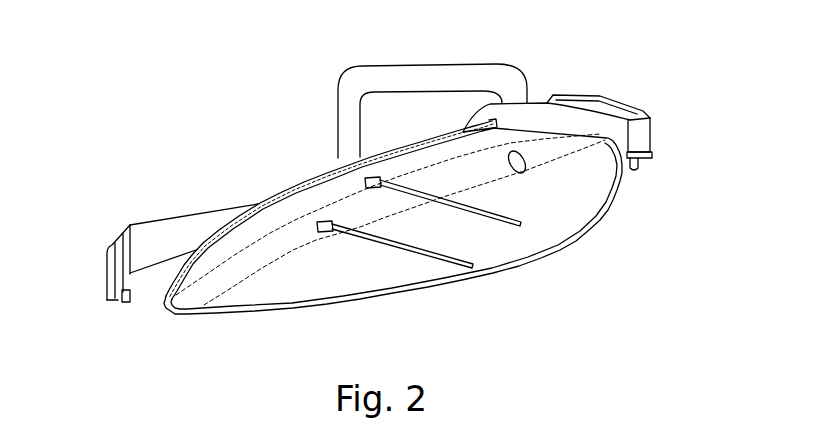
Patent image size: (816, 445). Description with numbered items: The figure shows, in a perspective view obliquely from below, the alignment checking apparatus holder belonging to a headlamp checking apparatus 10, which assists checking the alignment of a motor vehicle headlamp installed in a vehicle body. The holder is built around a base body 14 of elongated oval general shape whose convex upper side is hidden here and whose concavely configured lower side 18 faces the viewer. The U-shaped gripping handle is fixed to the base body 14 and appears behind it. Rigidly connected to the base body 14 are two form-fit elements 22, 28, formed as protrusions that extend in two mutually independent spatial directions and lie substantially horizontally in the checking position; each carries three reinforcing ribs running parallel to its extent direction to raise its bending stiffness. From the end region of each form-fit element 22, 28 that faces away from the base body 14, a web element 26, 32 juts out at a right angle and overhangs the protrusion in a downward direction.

The headlamp checking apparatus 10 is at (213, 136).
The base body 14 is at (306, 166).
The lower side 18 is at (250, 291).
The form-fit element 22 is at (151, 228).
The web element 26 is at (123, 303).
The form-fit element 28 is at (606, 129).
The web element 32 is at (652, 139).